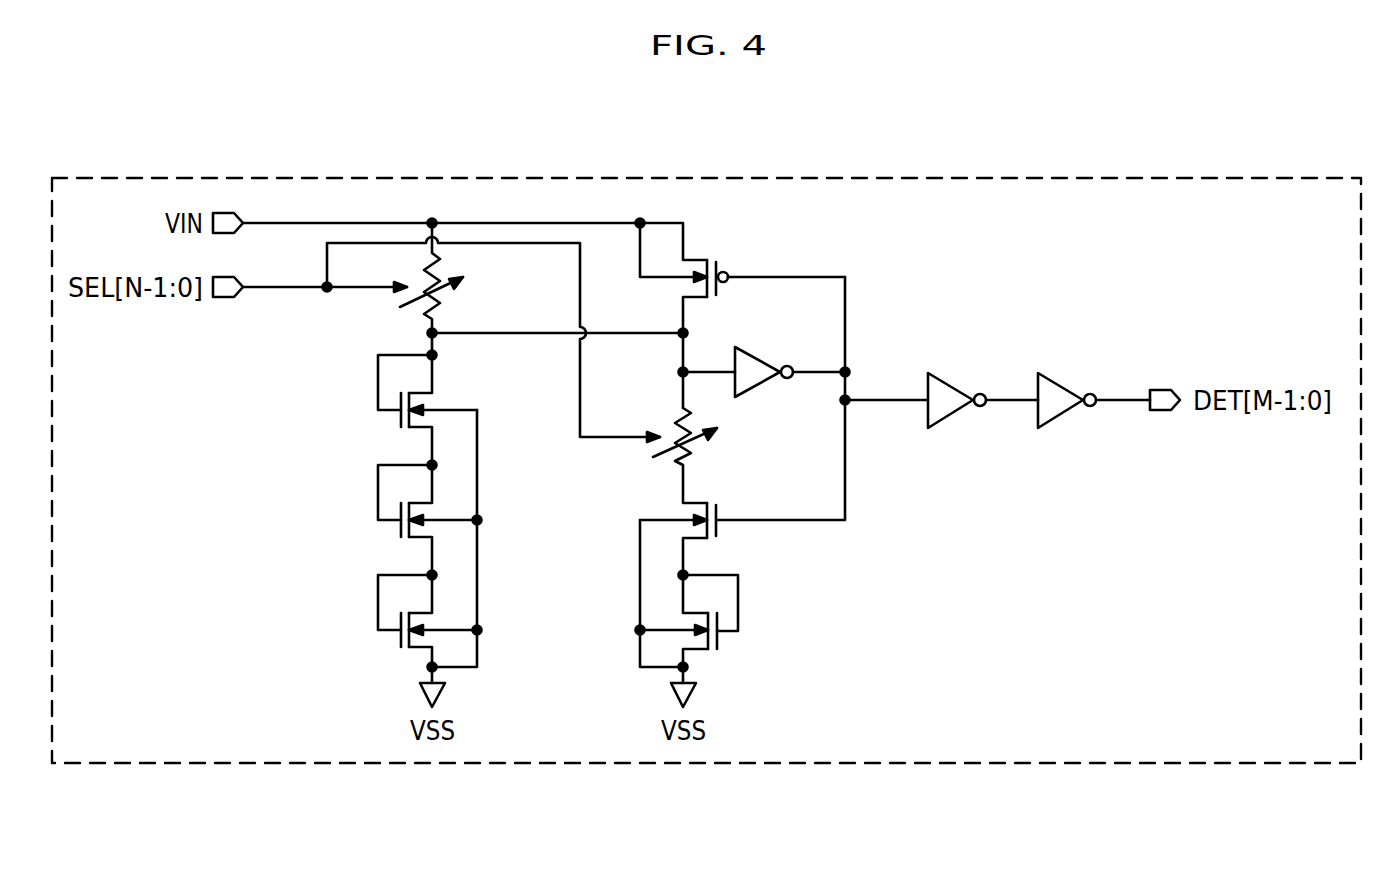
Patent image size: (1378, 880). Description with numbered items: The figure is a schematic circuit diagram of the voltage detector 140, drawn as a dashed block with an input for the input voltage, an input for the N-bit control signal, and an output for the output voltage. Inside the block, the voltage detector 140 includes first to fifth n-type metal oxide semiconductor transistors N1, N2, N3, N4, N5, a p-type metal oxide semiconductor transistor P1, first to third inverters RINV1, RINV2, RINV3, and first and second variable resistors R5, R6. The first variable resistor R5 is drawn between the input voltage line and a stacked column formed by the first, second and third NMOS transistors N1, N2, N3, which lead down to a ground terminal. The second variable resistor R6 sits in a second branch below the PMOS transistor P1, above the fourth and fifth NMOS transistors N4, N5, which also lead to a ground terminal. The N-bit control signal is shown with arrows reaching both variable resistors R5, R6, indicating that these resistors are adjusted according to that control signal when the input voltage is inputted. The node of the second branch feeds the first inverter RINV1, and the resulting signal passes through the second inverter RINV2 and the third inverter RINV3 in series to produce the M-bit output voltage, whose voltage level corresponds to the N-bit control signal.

The voltage detector 140 is at (1273, 178).
The first variable resistor R5 is at (443, 289).
The second variable resistor R6 is at (696, 455).
The first NMOS transistor N1 is at (409, 408).
The second NMOS transistor N2 is at (412, 518).
The third NMOS transistor N3 is at (412, 619).
The fourth NMOS transistor N4 is at (657, 539).
The fifth NMOS transistor N5 is at (669, 621).
The PMOS transistor P1 is at (742, 278).
The first inverter RINV1 is at (764, 352).
The second inverter RINV2 is at (983, 383).
The third inverter RINV3 is at (1094, 383).